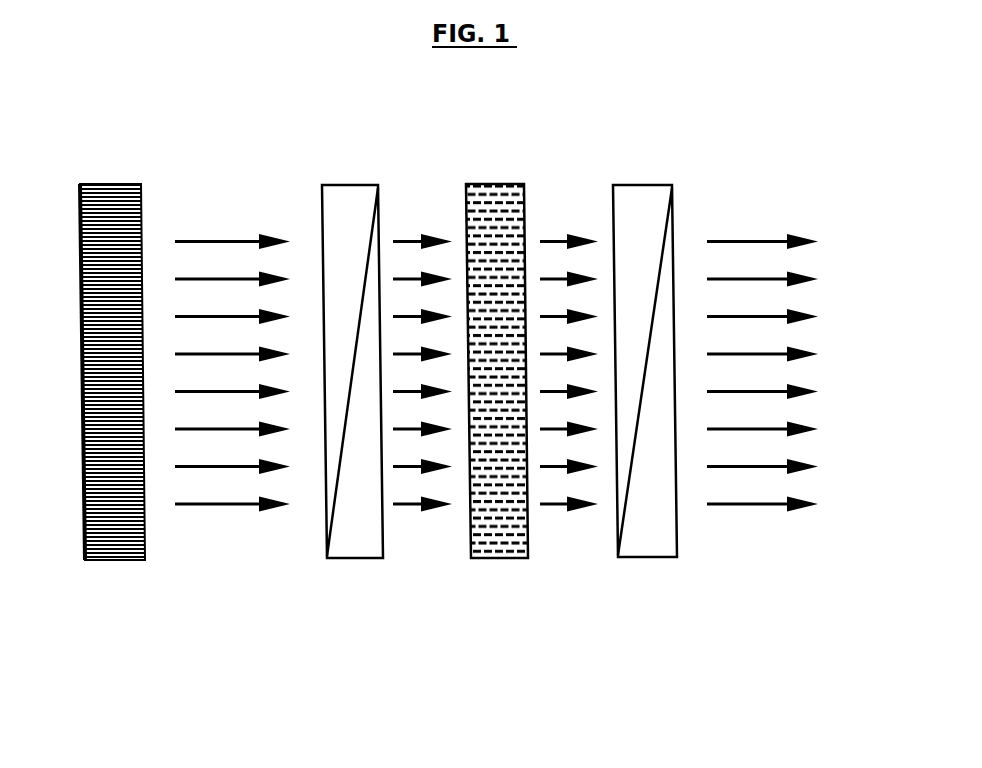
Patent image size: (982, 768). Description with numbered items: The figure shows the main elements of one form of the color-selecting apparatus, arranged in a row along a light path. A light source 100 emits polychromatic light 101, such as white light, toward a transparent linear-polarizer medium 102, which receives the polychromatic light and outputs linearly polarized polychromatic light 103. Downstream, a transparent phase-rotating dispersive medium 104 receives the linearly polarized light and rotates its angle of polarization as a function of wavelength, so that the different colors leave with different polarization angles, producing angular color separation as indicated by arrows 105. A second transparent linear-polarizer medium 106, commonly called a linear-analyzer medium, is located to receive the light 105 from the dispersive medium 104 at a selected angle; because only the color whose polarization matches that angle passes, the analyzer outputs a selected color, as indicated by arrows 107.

The light source 100 is at (122, 562).
The polychromatic light 101 is at (213, 505).
The transparent linear-polarizer medium 102 is at (343, 560).
The linearly polarized polychromatic light 103 is at (415, 505).
The transparent phase-rotating dispersive medium 104 is at (487, 560).
The arrows indicating angularly color-separated light 105 is at (567, 505).
The second transparent linear-polarizer medium 106 is at (637, 560).
The arrows indicating selected color output 107 is at (765, 505).